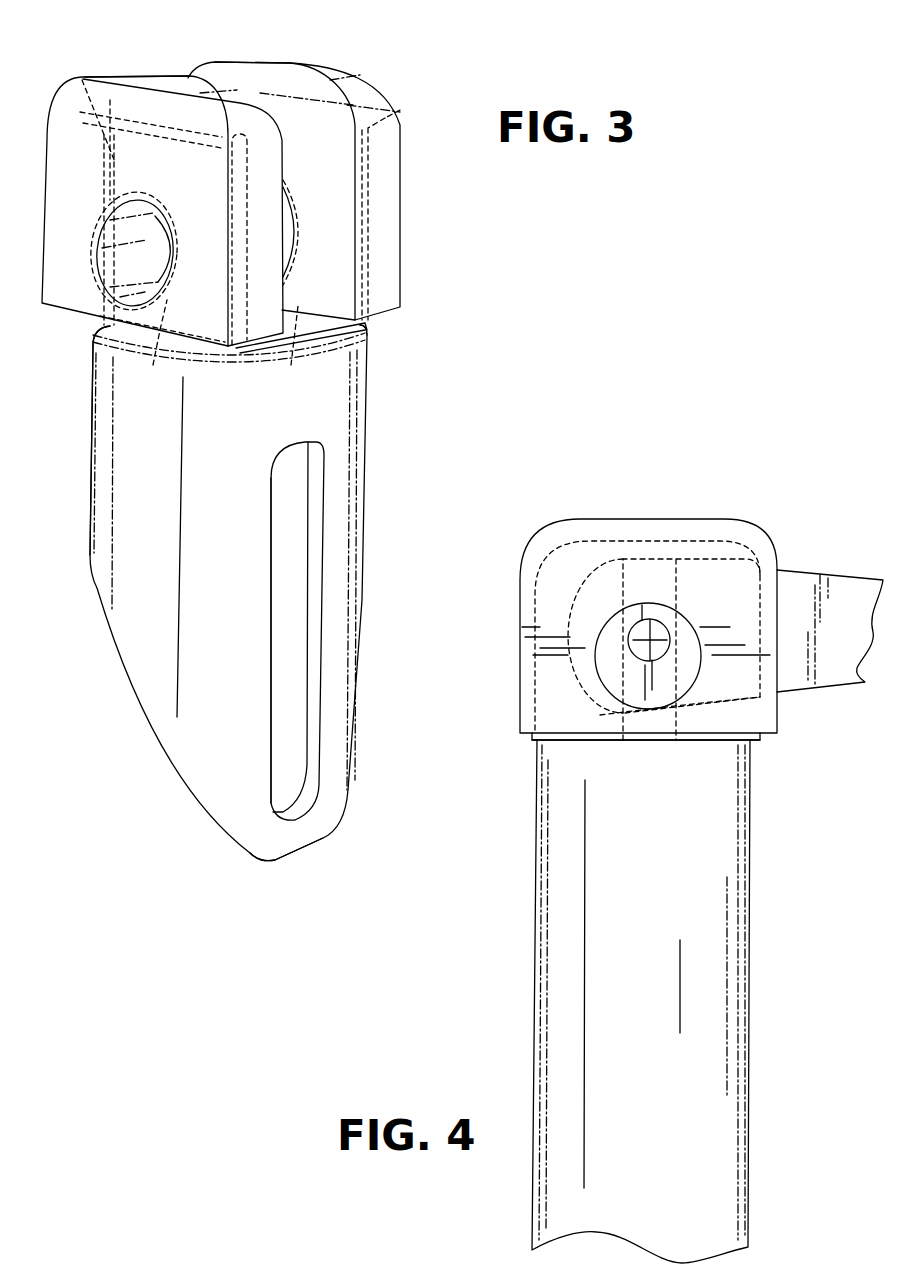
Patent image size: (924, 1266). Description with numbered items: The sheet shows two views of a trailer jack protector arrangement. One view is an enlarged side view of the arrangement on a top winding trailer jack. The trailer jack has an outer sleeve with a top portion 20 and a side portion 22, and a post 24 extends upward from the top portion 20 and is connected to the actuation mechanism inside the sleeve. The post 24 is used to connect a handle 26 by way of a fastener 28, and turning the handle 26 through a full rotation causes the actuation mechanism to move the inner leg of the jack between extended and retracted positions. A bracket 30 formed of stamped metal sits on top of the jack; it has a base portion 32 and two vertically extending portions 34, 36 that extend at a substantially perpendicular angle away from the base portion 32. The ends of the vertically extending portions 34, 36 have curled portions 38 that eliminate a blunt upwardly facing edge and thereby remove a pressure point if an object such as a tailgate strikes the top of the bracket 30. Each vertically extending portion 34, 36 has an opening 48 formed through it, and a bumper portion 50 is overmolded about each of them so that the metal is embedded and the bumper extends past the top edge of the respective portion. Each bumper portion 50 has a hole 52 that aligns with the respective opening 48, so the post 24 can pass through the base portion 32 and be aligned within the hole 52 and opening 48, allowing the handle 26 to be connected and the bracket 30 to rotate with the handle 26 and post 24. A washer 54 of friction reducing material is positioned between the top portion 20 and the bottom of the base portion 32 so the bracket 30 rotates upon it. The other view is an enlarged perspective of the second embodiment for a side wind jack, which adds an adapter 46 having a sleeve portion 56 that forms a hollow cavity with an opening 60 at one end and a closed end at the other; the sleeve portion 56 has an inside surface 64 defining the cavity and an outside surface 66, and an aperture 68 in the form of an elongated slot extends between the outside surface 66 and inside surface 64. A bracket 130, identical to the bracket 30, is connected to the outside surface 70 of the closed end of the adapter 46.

In FIG. 4, the top portion 20 is at (664, 627).
In FIG. 4, the side portion 22 is at (560, 913).
In FIG. 4, the post 24 is at (660, 577).
In FIG. 4, the handle 26 is at (800, 578).
In FIG. 4, the fastener 28 is at (637, 631).
In FIG. 4, the bracket 30 is at (722, 553).
In FIG. 3, the base portion 32 is at (317, 320).
In FIG. 3, the vertically extending portion 34 is at (82, 80).
In FIG. 3, the vertically extending portion 36 is at (320, 140).
In FIG. 3, the curled portion 38 is at (110, 100).
In FIG. 3, the adapter 46 is at (222, 580).
In FIG. 3, the opening 48 is at (153, 365).
In FIG. 3, the bumper portion 50 is at (160, 107).
In FIG. 3, the hole 52 is at (125, 263).
In FIG. 4, the washer 54 is at (540, 733).
In FIG. 3, the sleeve portion 56 is at (133, 555).
In FIG. 3, the opening 60 is at (161, 767).
In FIG. 3, the inside surface 64 is at (308, 745).
In FIG. 3, the outside surface 66 is at (320, 708).
In FIG. 3, the aperture 68 is at (283, 662).
In FIG. 3, the outside surface 70 is at (128, 335).
In FIG. 3, the bracket 130 is at (243, 205).